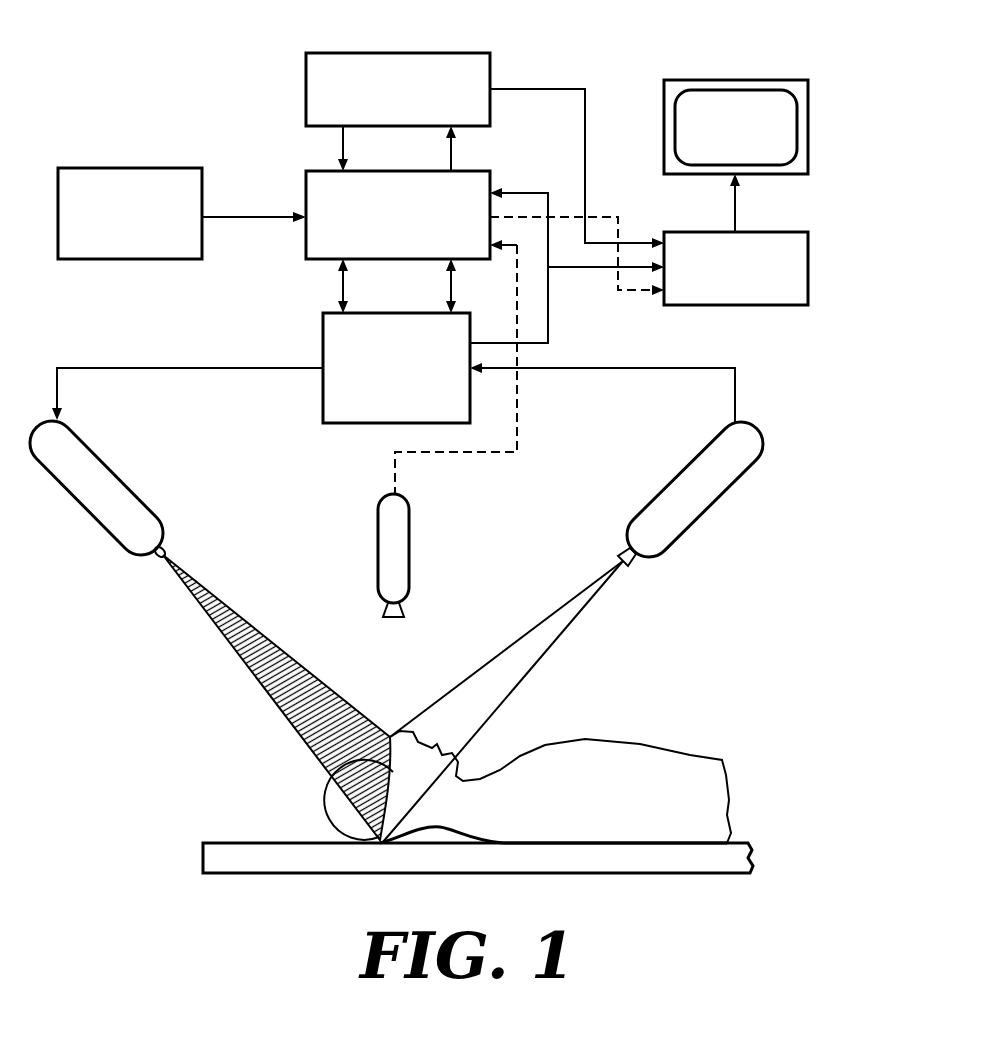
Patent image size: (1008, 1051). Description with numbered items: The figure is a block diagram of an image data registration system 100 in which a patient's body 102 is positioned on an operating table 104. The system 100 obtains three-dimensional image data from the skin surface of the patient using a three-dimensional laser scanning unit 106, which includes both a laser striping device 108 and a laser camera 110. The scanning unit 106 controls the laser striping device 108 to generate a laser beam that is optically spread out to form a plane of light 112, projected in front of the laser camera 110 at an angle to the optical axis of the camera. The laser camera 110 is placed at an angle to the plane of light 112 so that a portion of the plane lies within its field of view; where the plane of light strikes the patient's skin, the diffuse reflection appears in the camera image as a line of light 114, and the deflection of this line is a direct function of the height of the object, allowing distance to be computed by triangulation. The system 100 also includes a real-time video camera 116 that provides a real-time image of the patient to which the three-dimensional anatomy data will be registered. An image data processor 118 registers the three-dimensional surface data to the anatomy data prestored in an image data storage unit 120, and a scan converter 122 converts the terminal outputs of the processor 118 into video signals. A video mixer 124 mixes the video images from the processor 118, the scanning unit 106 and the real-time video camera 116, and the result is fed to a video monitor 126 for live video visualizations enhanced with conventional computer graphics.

The image data registration system 100 is at (805, 399).
The patient's body 102 is at (637, 750).
The operating table 104 is at (203, 856).
The 3D laser scanning unit 106 is at (323, 331).
The laser striping device 108 is at (92, 442).
The laser camera 110 is at (682, 537).
The plane of light 112 is at (250, 672).
The line of light 114 is at (333, 787).
The real-time video camera 116 is at (409, 557).
The image data processor 118 is at (473, 171).
The image data storage unit 120 is at (128, 168).
The scan converter 122 is at (415, 53).
The video mixer 124 is at (808, 267).
The video monitor 126 is at (808, 127).